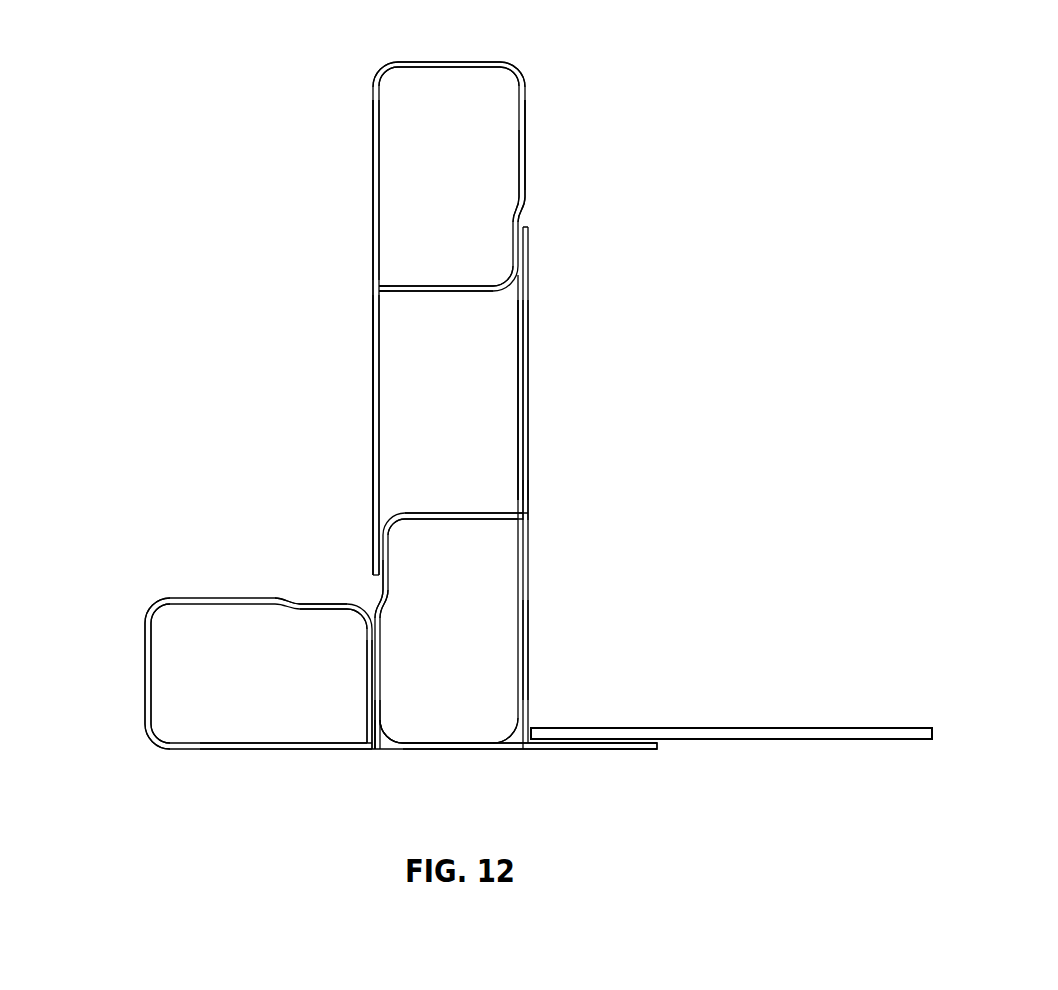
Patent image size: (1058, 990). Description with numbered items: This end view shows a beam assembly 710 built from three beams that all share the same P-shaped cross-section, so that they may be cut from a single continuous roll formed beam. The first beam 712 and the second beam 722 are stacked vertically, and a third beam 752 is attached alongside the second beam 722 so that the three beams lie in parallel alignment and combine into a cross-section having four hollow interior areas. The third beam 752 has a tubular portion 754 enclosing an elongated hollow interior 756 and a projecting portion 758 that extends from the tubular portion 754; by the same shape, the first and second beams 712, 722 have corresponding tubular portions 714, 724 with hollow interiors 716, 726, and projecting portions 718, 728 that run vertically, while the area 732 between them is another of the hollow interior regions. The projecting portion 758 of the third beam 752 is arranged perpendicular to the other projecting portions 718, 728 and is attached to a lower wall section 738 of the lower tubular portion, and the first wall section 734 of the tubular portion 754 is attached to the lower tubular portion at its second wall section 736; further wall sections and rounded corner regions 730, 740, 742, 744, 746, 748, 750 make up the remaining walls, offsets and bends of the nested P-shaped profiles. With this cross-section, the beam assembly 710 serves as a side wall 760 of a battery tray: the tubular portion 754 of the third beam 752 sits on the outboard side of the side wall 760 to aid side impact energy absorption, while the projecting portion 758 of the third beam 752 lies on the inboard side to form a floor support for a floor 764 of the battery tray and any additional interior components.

The beam assembly 710 is at (296, 111).
The first beam 712 is at (520, 52).
The second end 714 is at (382, 52).
The first loop portion 716 is at (436, 200).
The projecting portion 718 is at (528, 395).
The second beam 722 is at (520, 750).
The bottom corner 724 is at (404, 750).
The second loop portion 726 is at (436, 637).
The projecting portion 728 is at (372, 388).
The flange 730 is at (528, 245).
The intermediate section 732 is at (436, 430).
The first wall section 734 is at (422, 290).
The second wall section 736 is at (528, 145).
The lower wall section 738 is at (446, 62).
The side wall 740 is at (372, 178).
The rounded corner 742 is at (510, 82).
The wall end 744 is at (379, 298).
The junction 746 is at (382, 288).
The offset step 748 is at (521, 213).
The transition portion 750 is at (528, 115).
The third beam 752 is at (141, 582).
The tubular portion 754 is at (150, 760).
The elongated hollow interior 756 is at (243, 684).
The projecting portion 758 is at (585, 750).
The side wall 760 is at (605, 50).
The floor 764 is at (752, 727).